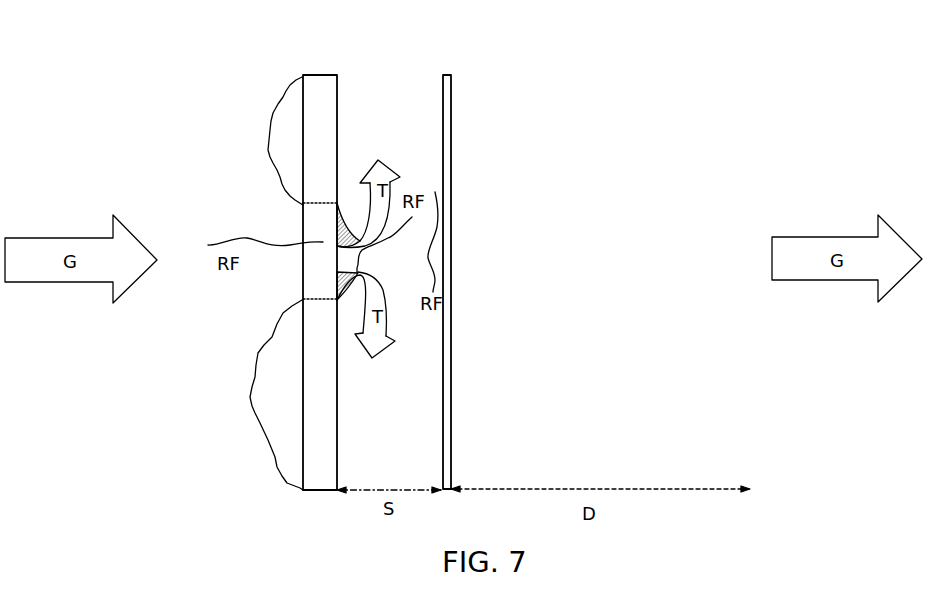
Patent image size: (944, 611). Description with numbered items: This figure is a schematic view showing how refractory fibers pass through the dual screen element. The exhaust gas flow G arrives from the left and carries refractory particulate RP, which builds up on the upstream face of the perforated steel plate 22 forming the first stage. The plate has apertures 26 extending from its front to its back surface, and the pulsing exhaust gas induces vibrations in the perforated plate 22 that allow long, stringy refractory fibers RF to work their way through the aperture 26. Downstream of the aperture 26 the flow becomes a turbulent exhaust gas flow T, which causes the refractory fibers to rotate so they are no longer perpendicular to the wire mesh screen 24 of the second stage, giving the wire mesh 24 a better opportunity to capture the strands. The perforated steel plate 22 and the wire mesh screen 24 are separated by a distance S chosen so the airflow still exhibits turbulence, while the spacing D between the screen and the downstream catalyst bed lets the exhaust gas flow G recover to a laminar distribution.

The perforated steel plate 22 is at (317, 93).
The wire mesh screen 24 is at (452, 113).
The aperture 26 is at (317, 223).